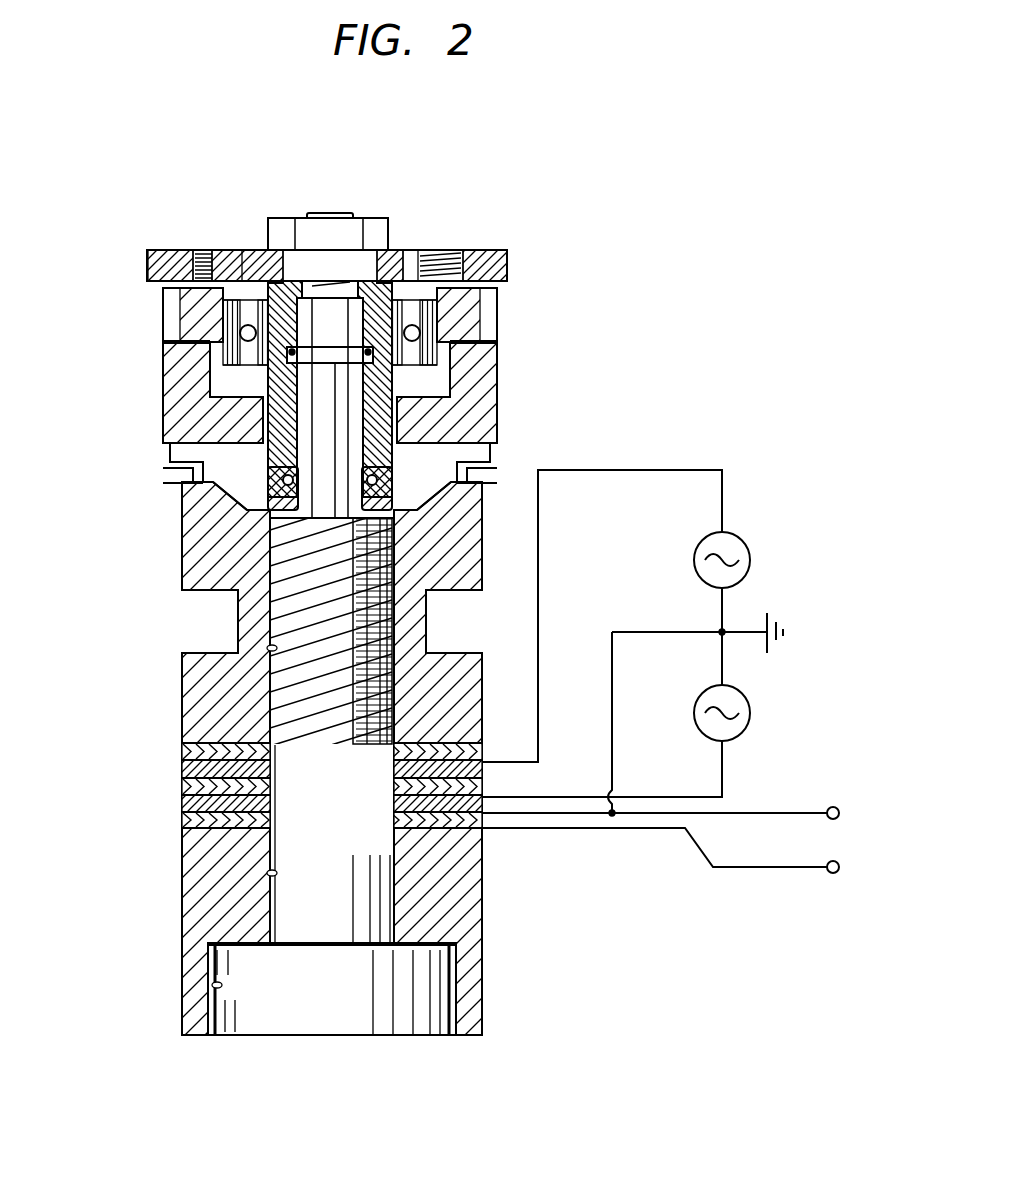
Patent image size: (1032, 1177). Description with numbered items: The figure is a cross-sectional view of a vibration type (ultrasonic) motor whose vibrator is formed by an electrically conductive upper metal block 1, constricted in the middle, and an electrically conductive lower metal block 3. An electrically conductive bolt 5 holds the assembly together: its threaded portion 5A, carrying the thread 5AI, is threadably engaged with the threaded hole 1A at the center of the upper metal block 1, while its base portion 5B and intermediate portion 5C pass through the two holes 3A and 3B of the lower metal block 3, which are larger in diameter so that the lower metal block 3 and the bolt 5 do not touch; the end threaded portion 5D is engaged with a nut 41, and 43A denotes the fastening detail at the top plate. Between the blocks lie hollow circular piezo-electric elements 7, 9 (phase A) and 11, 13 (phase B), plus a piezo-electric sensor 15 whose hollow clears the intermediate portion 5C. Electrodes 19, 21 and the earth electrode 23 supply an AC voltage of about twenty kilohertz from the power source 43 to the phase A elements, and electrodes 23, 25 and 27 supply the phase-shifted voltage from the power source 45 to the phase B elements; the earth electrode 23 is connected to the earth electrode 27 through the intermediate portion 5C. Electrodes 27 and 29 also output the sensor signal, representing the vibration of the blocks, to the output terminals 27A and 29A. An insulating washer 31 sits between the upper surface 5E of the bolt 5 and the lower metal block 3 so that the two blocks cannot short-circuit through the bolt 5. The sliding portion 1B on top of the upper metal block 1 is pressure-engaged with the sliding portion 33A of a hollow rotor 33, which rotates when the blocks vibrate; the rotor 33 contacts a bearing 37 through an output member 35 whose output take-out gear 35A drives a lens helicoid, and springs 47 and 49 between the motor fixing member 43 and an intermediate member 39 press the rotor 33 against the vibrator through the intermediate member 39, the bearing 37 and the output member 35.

The upper metal block 1 is at (180, 665).
The threaded hole 1A is at (268, 645).
The sliding portion 1B is at (185, 495).
The lower metal block 3 is at (488, 1008).
The hole 3A is at (223, 985).
The hole 3B is at (270, 873).
The bolt 5 is at (408, 1028).
The threaded portion 5A is at (395, 638).
The screw thread 5AI is at (265, 603).
The base portion 5B is at (233, 1030).
The intermediate portion 5C is at (267, 913).
The threaded portion 5D is at (330, 215).
The upper surface 5E is at (250, 950).
The piezo-electric element 7 is at (192, 750).
The piezo-electric element 9 is at (190, 768).
The piezo-electric element 11 is at (187, 788).
The piezo-electric element 13 is at (187, 807).
The sensor 15 is at (187, 823).
The electrode 19 is at (217, 748).
The electrode 21 is at (510, 757).
The earth electrode 23 is at (390, 760).
The electrode 25 is at (542, 795).
The earth electrode 27 is at (550, 815).
The output terminal 27A is at (857, 785).
The electrode 29 is at (523, 830).
The output terminal 29A is at (836, 873).
The insulating washer 31 is at (227, 935).
The rotor 33 is at (175, 410).
The sliding portion 33A is at (170, 480).
The output member 35 is at (158, 295).
The output take-out gear 35A is at (163, 335).
The bearing 37 is at (430, 297).
The intermediate member 39 is at (390, 293).
The nut 41 is at (280, 225).
The motor fixing member / power source 43 is at (158, 265).
The fastening screw 43A is at (207, 250).
The power source 45 is at (745, 693).
The spring 47 is at (387, 468).
The spring 49 is at (200, 425).